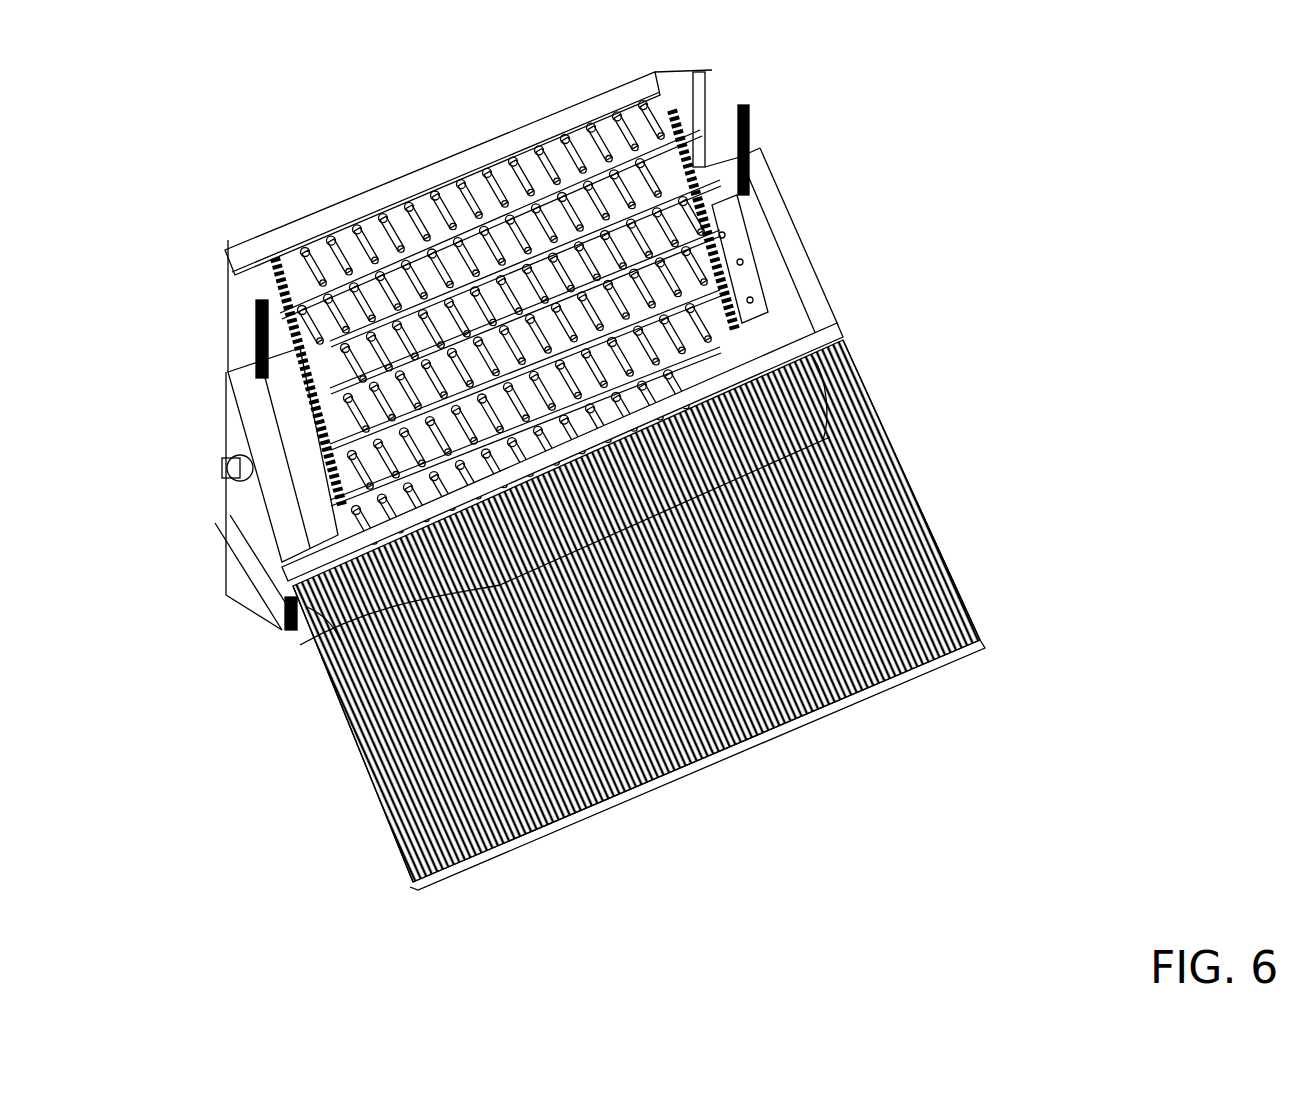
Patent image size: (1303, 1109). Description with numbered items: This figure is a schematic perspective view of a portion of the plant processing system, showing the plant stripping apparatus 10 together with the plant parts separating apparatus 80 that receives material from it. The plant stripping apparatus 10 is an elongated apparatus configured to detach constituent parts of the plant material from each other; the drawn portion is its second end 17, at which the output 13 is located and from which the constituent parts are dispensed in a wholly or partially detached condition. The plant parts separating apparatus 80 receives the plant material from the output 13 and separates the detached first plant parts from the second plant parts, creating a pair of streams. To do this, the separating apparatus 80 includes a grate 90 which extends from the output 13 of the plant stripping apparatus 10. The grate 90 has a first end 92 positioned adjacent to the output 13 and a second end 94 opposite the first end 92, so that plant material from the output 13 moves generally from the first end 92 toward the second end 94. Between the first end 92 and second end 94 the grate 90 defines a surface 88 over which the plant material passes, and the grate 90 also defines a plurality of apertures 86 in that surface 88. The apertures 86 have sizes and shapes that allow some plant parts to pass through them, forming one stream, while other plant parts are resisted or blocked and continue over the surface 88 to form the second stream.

The plant stripping apparatus 10 is at (783, 90).
The second end 17 is at (262, 200).
The output 13 is at (745, 215).
The plant parts separating apparatus 80 is at (935, 437).
The first end 92 is at (838, 330).
The apertures 86 is at (920, 523).
The surface 88 is at (950, 565).
The second end 94 is at (980, 640).
The grate 90 is at (325, 717).